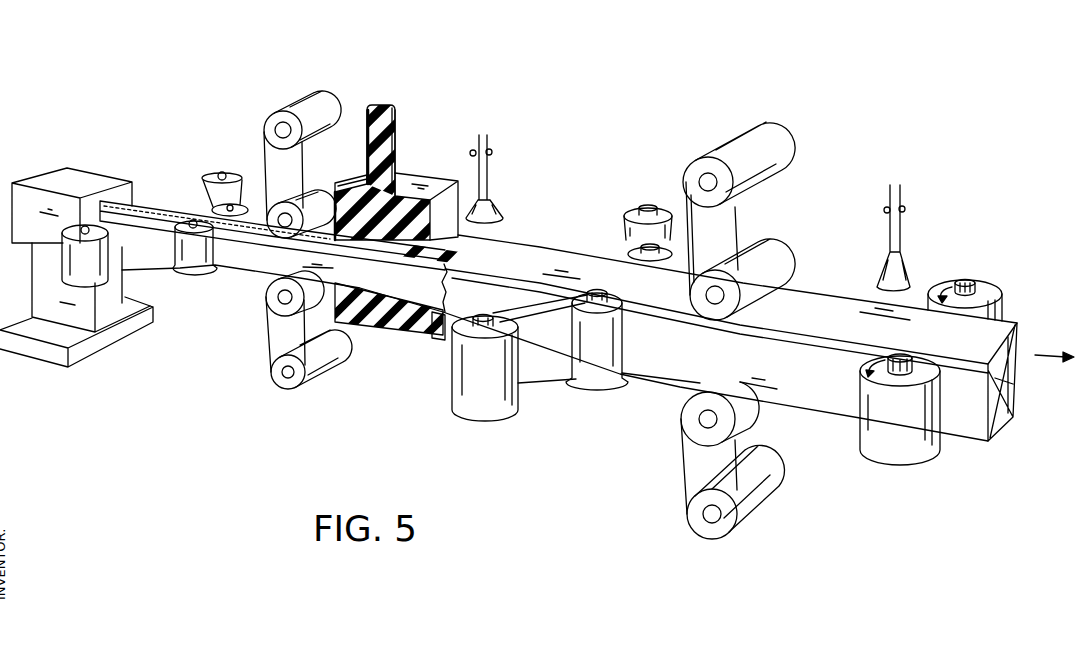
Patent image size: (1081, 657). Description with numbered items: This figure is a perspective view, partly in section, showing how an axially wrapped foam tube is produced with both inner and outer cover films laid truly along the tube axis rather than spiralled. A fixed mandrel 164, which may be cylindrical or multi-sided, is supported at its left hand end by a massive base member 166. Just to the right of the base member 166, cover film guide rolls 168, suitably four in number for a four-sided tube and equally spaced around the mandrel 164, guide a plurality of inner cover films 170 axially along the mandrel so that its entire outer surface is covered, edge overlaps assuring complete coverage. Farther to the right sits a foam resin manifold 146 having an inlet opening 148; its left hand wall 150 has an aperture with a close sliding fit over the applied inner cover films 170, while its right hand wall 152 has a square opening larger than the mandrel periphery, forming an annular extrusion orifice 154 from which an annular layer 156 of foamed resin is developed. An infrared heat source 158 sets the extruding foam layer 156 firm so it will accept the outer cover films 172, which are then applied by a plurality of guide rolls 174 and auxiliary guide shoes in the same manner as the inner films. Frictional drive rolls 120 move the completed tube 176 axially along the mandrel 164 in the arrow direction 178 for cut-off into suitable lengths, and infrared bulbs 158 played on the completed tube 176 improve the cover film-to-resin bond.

The frictional drive rolls 120 is at (983, 288).
The foam resin manifold 146 is at (428, 170).
The inlet opening 148 is at (382, 103).
The left hand wall 150 is at (325, 305).
The right hand wall 152 is at (447, 210).
The annular extrusion orifice 154 is at (435, 331).
The annular layer of foamed resin 156 is at (562, 248).
The infrared heat source 158 is at (495, 205).
The mandrel 164 is at (153, 198).
The base member 166 is at (97, 180).
The cover film guide rolls 168 is at (257, 187).
The inner cover films 170 is at (215, 183).
The outer cover films 172 is at (623, 248).
The guide rolls 174 is at (678, 207).
The completed tube 176 is at (1005, 440).
The arrow direction 178 is at (1043, 360).